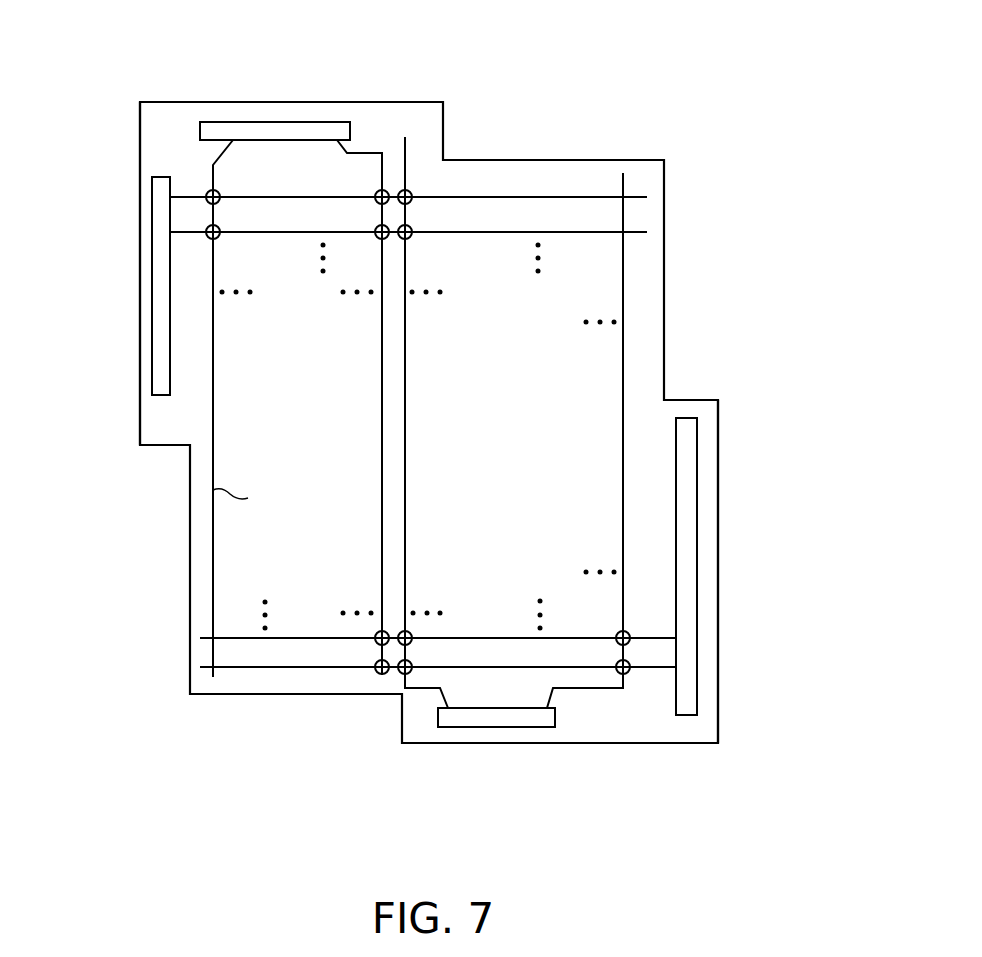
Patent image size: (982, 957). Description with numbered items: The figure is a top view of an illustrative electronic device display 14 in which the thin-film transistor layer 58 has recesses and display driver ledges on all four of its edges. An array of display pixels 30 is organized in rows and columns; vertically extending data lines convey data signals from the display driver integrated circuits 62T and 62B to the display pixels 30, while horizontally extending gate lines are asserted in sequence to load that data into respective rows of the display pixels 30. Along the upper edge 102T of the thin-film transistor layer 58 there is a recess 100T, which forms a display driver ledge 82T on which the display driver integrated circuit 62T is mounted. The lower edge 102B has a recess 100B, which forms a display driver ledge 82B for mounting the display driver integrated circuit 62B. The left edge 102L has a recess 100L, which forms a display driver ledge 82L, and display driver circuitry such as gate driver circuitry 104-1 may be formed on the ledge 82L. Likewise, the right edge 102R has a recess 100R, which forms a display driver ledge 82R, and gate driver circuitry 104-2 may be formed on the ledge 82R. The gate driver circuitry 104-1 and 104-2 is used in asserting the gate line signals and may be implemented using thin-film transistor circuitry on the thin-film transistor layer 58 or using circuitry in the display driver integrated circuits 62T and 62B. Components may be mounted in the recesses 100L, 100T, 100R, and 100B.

The display 14 is at (737, 43).
The thin-film transistor layer 58 is at (710, 417).
The display pixels 30 is at (219, 200).
The upper edge 102T is at (263, 102).
The lower edge 102B is at (552, 747).
The left edge 102L is at (140, 217).
The right edge 102R is at (718, 520).
The display driver integrated circuit 62T is at (325, 127).
The display driver integrated circuit 62B is at (475, 720).
The gate driver circuitry 104-1 is at (158, 318).
The gate driver circuitry 104-2 is at (688, 612).
The recess 100T is at (658, 90).
The recess 100B is at (190, 752).
The recess 100L is at (127, 448).
The recess 100R is at (736, 157).
The display driver ledge 82T is at (130, 102).
The display driver ledge 82B is at (730, 668).
The display driver ledge 82L is at (138, 97).
The display driver ledge 82R is at (643, 750).